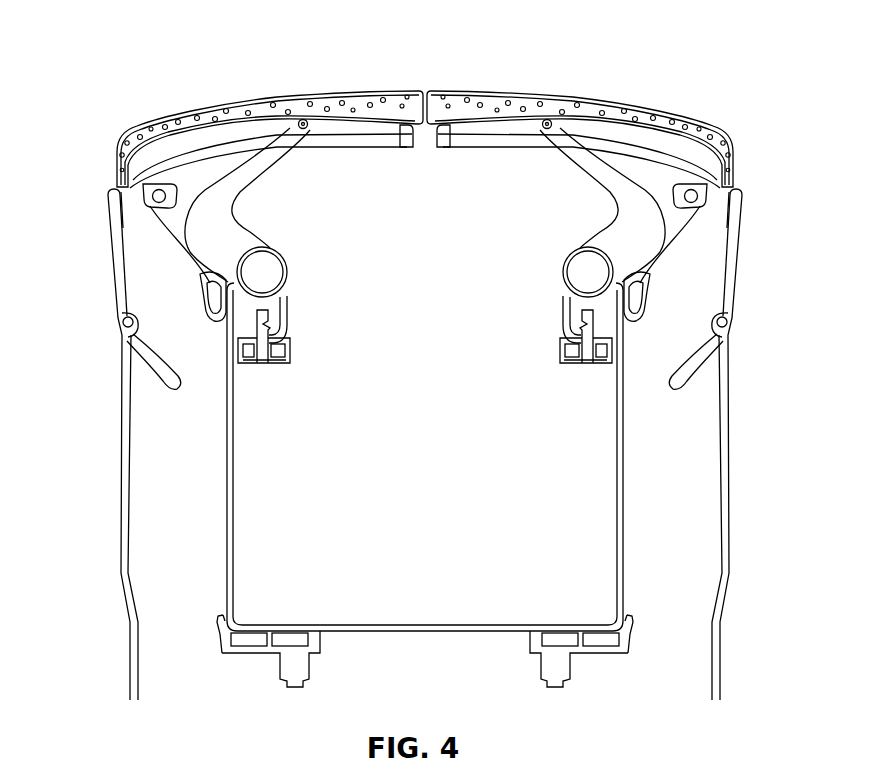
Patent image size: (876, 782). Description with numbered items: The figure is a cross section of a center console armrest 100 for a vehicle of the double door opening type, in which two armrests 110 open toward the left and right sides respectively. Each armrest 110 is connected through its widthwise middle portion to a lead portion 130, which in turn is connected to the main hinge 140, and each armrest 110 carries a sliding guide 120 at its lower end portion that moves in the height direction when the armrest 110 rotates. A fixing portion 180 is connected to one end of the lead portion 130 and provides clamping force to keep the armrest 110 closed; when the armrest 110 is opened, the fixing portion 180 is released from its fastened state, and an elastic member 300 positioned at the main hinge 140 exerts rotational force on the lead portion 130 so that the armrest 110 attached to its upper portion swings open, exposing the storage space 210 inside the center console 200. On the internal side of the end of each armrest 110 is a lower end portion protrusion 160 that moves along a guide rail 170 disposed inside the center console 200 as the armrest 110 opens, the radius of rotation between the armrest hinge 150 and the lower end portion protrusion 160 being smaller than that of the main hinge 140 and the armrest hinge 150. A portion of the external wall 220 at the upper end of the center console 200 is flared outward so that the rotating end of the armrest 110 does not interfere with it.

The center console armrest 100 is at (453, 60).
The armrest 110 is at (185, 103).
The sliding guide 120 is at (426, 133).
The lead portion 130 is at (231, 208).
The main hinge 140 is at (297, 290).
The armrest hinge 150 is at (302, 121).
The lower end portion protrusion 160 is at (692, 197).
The guide rail 170 is at (667, 255).
The fixing portion 180 is at (289, 328).
The center console 200 is at (735, 444).
The storage space 210 is at (435, 550).
The external wall 220 is at (110, 254).
The elastic member 300 is at (273, 282).